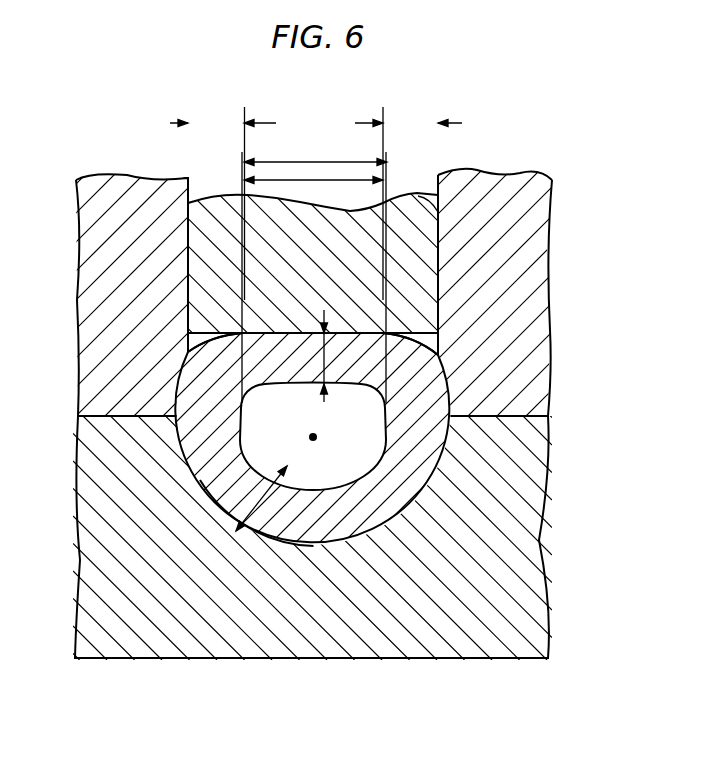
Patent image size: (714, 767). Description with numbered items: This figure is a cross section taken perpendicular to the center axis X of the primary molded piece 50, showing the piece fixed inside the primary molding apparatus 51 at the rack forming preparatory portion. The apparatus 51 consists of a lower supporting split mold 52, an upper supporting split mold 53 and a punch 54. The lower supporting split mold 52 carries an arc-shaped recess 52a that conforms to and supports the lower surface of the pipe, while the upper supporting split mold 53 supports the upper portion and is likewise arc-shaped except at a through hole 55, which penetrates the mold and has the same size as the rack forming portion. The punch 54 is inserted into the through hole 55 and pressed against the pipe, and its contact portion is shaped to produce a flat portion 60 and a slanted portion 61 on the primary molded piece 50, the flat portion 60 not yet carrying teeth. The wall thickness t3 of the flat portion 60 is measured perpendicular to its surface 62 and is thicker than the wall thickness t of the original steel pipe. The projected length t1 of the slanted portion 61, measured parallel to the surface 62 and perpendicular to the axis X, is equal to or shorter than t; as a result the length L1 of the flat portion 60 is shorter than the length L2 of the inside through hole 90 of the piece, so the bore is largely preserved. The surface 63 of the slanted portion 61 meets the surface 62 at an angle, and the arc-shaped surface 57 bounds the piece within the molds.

The primary molded piece 50 is at (321, 552).
The primary molding apparatus 51 is at (509, 168).
The lower supporting split mold 52 is at (545, 480).
The recess 52a is at (285, 535).
The upper supporting split mold 53 is at (135, 178).
The punch 54 is at (209, 204).
The through hole 55 is at (188, 178).
The hole 57 is at (337, 473).
The flat portion 60 is at (350, 324).
The slanted portion 61 is at (204, 343).
The surface of the flat portion 62 is at (293, 333).
The surface of the slanted portion 63 is at (225, 338).
The inside through hole 90 is at (360, 443).
The wall thickness of the steel pipe t is at (257, 501).
The projected length of the slanted portion t1 is at (214, 122).
The wall thickness of the flat portion t3 is at (330, 375).
The length of the flat portion L1 is at (300, 161).
The length of the inside through hole L2 is at (337, 179).
The center axis X is at (317, 441).